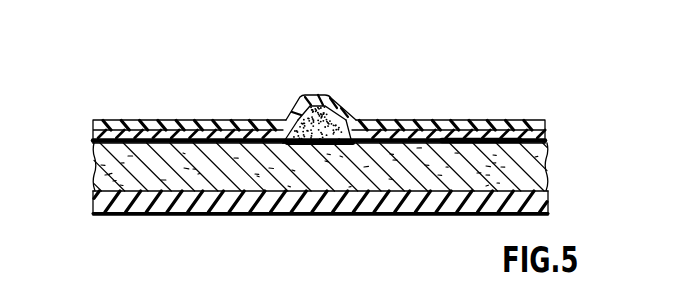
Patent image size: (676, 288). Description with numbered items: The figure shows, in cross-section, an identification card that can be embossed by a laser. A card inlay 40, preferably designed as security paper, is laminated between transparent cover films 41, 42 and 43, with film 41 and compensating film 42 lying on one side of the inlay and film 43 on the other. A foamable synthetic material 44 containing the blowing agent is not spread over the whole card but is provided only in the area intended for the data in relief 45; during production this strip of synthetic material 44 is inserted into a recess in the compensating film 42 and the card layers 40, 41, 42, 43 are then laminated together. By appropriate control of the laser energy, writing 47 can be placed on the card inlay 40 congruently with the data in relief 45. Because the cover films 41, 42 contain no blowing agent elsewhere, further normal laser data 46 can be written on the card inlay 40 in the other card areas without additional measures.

The card inlay 40 is at (98, 172).
The transparent cover film 41 is at (113, 125).
The compensating film 42 is at (92, 140).
The transparent cover film 43 is at (97, 202).
The synthetic material 44 is at (291, 117).
The data in relief 45 is at (341, 103).
The normal laser data 46 is at (482, 137).
The writing 47 is at (327, 144).